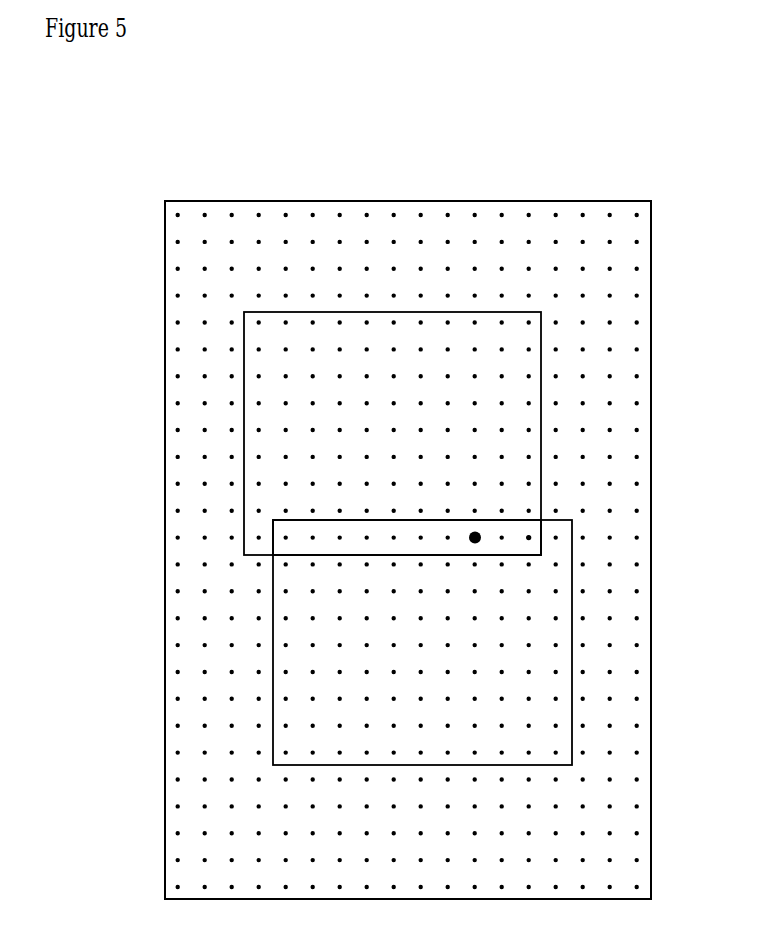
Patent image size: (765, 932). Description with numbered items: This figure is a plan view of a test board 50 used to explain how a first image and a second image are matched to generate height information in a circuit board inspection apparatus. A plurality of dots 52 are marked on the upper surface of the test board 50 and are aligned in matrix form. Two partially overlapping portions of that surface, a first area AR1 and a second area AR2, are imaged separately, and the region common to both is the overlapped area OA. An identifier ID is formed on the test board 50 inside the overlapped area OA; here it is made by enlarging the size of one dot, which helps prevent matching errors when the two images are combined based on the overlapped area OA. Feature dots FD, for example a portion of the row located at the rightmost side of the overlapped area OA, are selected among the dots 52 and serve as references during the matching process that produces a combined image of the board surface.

The test board 50 is at (377, 201).
The dots 52 is at (447, 213).
The first area AR1 is at (242, 362).
The second area AR2 is at (273, 661).
The overlapped area OA is at (278, 533).
The identifier ID is at (475, 537).
The feature dots FD is at (529, 538).